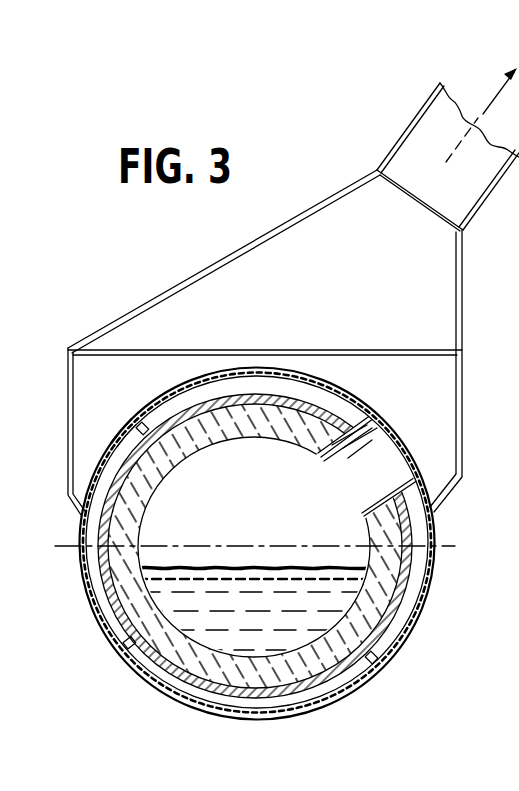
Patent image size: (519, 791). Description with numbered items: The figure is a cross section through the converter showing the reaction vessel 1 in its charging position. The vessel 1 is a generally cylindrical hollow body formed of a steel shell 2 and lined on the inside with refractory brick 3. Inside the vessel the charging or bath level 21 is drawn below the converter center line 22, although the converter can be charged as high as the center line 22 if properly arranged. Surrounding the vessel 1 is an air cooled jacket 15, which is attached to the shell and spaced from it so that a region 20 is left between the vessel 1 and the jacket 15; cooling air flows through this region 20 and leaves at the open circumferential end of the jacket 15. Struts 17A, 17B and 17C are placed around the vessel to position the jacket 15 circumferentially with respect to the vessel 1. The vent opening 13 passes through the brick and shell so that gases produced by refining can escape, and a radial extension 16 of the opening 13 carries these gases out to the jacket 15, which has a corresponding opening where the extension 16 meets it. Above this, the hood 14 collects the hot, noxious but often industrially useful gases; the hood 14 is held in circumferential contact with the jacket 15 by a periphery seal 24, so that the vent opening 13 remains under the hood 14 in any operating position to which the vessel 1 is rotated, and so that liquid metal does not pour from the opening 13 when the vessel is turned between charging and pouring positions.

The reaction vessel 1 is at (152, 668).
The steel shell 2 is at (183, 690).
The refractory brick 3 is at (238, 684).
The vent opening 13 is at (373, 461).
The hood 14 is at (160, 288).
The air cooled jacket 15 is at (106, 655).
The radial extension 16 is at (352, 407).
The strut 17A is at (390, 654).
The liner section 17B is at (113, 641).
The strut 17C is at (141, 436).
The region 20 is at (132, 447).
The bath level 21 is at (229, 566).
The converter center line 22 is at (265, 531).
The periphery seal 24 is at (119, 431).